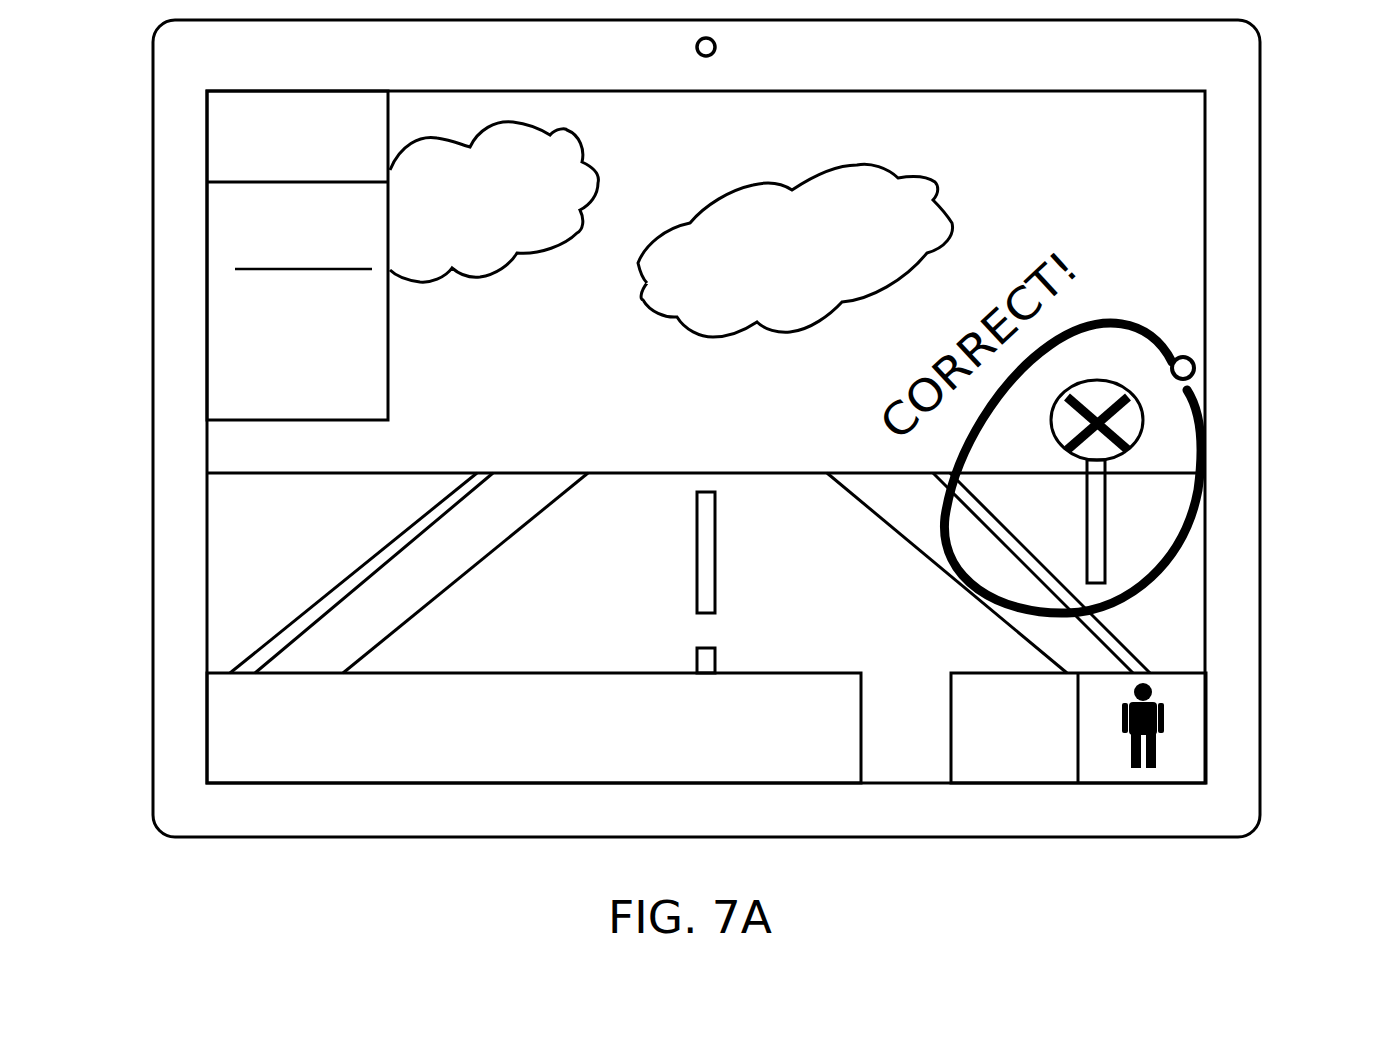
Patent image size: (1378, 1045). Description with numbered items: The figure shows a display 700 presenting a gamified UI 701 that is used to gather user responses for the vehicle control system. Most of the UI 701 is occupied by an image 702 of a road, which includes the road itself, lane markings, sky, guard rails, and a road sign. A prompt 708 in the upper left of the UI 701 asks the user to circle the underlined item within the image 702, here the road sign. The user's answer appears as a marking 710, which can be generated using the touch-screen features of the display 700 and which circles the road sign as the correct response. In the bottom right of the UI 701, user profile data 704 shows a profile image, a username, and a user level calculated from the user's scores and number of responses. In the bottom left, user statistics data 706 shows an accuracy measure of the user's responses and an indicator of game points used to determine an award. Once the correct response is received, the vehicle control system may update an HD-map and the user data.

The display 700 is at (1261, 57).
The gamified UI 701 is at (1205, 126).
The image 702 is at (243, 547).
The user profile data 704 is at (1093, 755).
The user statistics data 706 is at (823, 755).
The prompt 708 is at (240, 110).
The marking 710 is at (1162, 583).